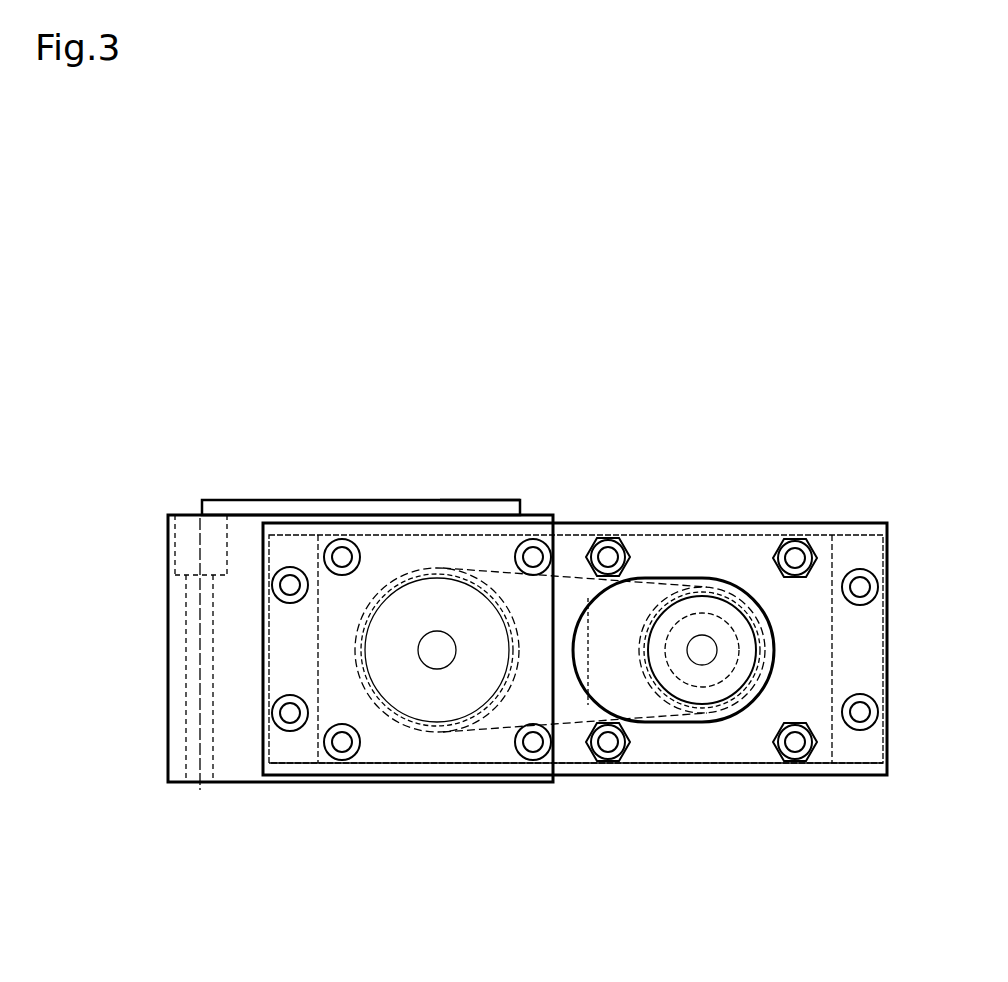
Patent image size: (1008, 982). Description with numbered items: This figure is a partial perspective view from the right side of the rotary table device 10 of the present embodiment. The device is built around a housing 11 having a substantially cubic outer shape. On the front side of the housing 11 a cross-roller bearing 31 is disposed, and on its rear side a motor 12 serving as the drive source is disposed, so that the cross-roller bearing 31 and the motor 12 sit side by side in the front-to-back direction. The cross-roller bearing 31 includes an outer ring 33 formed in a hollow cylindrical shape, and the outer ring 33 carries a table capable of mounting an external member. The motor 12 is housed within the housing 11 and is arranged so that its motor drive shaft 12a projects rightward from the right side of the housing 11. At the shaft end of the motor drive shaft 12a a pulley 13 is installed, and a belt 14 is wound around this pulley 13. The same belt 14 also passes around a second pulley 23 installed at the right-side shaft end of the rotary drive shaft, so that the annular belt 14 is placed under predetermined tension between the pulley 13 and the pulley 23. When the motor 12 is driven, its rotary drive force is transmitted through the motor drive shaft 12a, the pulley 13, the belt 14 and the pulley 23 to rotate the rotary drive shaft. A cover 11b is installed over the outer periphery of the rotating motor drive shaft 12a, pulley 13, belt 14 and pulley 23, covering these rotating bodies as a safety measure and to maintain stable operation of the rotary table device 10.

The rotary table device 10 is at (690, 333).
The housing 11 is at (165, 648).
The cover 11b is at (388, 745).
The motor 12 is at (627, 603).
The motor drive shaft 12a is at (707, 657).
The pulley 13 is at (728, 594).
The belt 14 is at (642, 705).
The pulley 23 is at (458, 695).
The cross-roller bearing 31 is at (466, 499).
The outer ring 33 is at (283, 500).